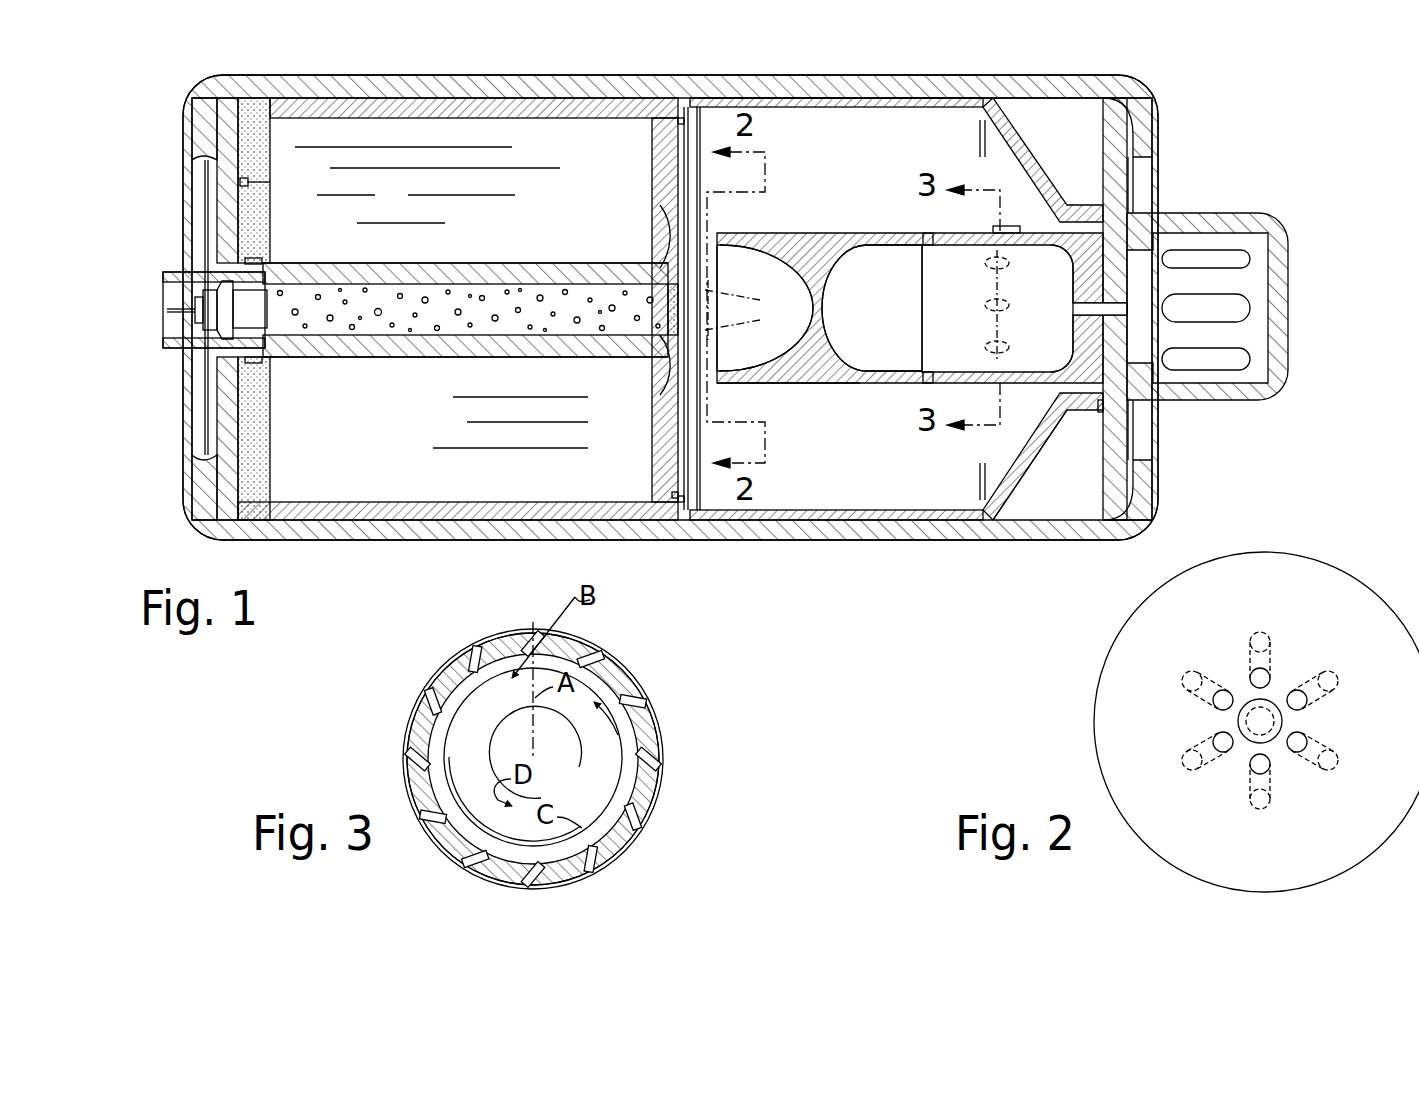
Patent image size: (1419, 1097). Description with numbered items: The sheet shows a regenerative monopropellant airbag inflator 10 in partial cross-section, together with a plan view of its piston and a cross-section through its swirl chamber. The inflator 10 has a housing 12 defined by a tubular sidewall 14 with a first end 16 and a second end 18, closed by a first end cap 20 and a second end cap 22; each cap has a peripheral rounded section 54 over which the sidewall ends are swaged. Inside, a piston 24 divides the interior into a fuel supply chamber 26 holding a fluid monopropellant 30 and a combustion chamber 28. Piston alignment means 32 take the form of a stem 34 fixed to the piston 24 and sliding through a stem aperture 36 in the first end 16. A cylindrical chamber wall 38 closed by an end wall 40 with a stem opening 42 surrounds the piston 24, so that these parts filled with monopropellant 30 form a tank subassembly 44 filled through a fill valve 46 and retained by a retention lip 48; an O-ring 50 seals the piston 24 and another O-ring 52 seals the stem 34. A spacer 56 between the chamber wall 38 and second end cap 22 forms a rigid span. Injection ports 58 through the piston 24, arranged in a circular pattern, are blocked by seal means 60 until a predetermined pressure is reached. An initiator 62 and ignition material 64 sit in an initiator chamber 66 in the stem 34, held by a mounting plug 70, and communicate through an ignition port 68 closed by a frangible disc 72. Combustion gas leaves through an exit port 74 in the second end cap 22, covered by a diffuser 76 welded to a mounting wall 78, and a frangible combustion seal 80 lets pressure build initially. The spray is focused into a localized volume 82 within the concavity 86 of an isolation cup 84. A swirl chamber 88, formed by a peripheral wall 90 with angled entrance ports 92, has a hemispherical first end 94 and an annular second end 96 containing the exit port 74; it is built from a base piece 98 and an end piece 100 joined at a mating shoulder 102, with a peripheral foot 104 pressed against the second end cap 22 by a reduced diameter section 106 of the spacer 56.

In FIG. 1, the regenerative monopropellant airbag inflator 10 is at (1168, 86).
In FIG. 1, the housing 12 is at (325, 76).
In FIG. 1, the sidewall 14 is at (880, 76).
In FIG. 1, the first end 16 is at (200, 118).
In FIG. 1, the second end 18 is at (1160, 135).
In FIG. 1, the first end cap 20 is at (217, 182).
In FIG. 1, the second end cap 22 is at (1133, 192).
In FIG. 1, the piston 24 is at (652, 162).
In FIG. 2, the piston 24 is at (1256, 722).
In FIG. 1, the fuel supply chamber 26 is at (433, 185).
In FIG. 1, the combustion chamber 28 is at (937, 310).
In FIG. 1, the fluid monopropellant 30 is at (515, 480).
In FIG. 1, the piston alignment means 32 is at (372, 263).
In FIG. 1, the stem 34 is at (455, 263).
In FIG. 1, the stem aperture 36 is at (230, 346).
In FIG. 1, the chamber wall 38 is at (368, 503).
In FIG. 1, the end wall 40 is at (270, 472).
In FIG. 1, the stem opening 42 is at (262, 363).
In FIG. 1, the tank subassembly 44 is at (470, 98).
In FIG. 1, the fill valve 46 is at (265, 176).
In FIG. 1, the retention lip 48 is at (690, 520).
In FIG. 1, the O-ring 50 is at (668, 494).
In FIG. 1, the O-ring 52 is at (262, 258).
In FIG. 1, the peripheral rounded section 54 is at (200, 492).
In FIG. 1, the spacer 56 is at (858, 107).
In FIG. 1, the injection ports 58 is at (660, 222).
In FIG. 2, the injection ports 58 is at (1320, 685).
In FIG. 1, the seal means 60 is at (700, 385).
In FIG. 2, the seal means 60 is at (1302, 740).
In FIG. 1, the initiator 62 is at (192, 308).
In FIG. 1, the ignition material 64 is at (445, 357).
In FIG. 1, the initiator chamber 66 is at (475, 332).
In FIG. 1, the ignition port 68 is at (668, 300).
In FIG. 2, the ignition port 68 is at (1246, 721).
In FIG. 1, the mounting plug 70 is at (205, 272).
In FIG. 1, the frangible disc 72 is at (700, 332).
In FIG. 2, the frangible disc 72 is at (1248, 740).
In FIG. 1, the exit port 74 is at (1140, 310).
In FIG. 1, the diffuser 76 is at (1290, 346).
In FIG. 1, the mounting wall 78 is at (1168, 358).
In FIG. 1, the frangible combustion seal 80 is at (1015, 228).
In FIG. 3, the frangible combustion seal 80 is at (662, 823).
In FIG. 1, the localized volume 82 is at (748, 320).
In FIG. 1, the isolation cup 84 is at (770, 384).
In FIG. 1, the concavity 86 is at (792, 356).
In FIG. 1, the swirl chamber 88 is at (863, 308).
In FIG. 3, the swirl chamber 88 is at (635, 752).
In FIG. 1, the peripheral wall 90 is at (880, 233).
In FIG. 3, the peripheral wall 90 is at (628, 846).
In FIG. 1, the entrance ports 92 is at (985, 305).
In FIG. 3, the entrance ports 92 is at (648, 700).
In FIG. 1, the first end 94 is at (835, 348).
In FIG. 3, the first end 94 is at (502, 822).
In FIG. 1, the second end 96 is at (1074, 345).
In FIG. 1, the base piece 98 is at (1040, 408).
In FIG. 1, the end piece 100 is at (875, 384).
In FIG. 1, the mating shoulder 102 is at (927, 366).
In FIG. 1, the peripheral foot 104 is at (1100, 412).
In FIG. 1, the reduced diameter section 106 is at (1005, 497).